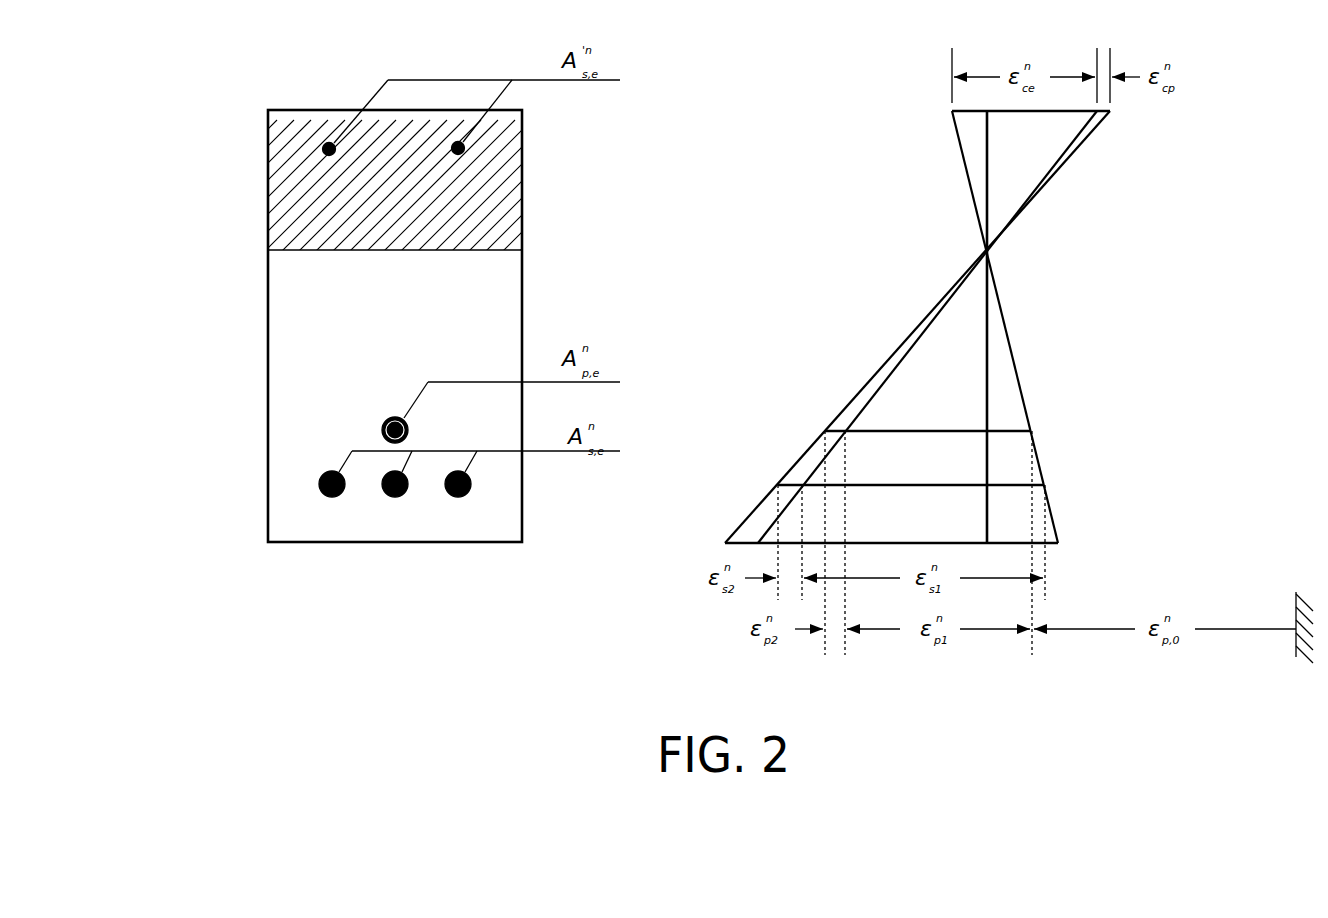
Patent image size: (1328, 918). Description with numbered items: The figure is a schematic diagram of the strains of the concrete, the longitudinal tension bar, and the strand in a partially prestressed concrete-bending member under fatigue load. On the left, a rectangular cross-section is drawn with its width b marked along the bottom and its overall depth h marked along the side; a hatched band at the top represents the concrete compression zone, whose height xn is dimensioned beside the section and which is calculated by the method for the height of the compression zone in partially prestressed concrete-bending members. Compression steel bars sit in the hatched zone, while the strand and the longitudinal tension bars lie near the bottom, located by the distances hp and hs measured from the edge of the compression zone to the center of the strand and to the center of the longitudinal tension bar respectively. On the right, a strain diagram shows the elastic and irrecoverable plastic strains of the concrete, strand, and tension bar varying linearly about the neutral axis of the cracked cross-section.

The width of the cross-section b is at (522, 557).
The section height h is at (248, 542).
The distance from center of longitudinal tension bar to compression zone edge hs is at (248, 483).
The distance from center of strand to compression zone edge hp is at (248, 430).
The height of the compression zone xn is at (608, 249).